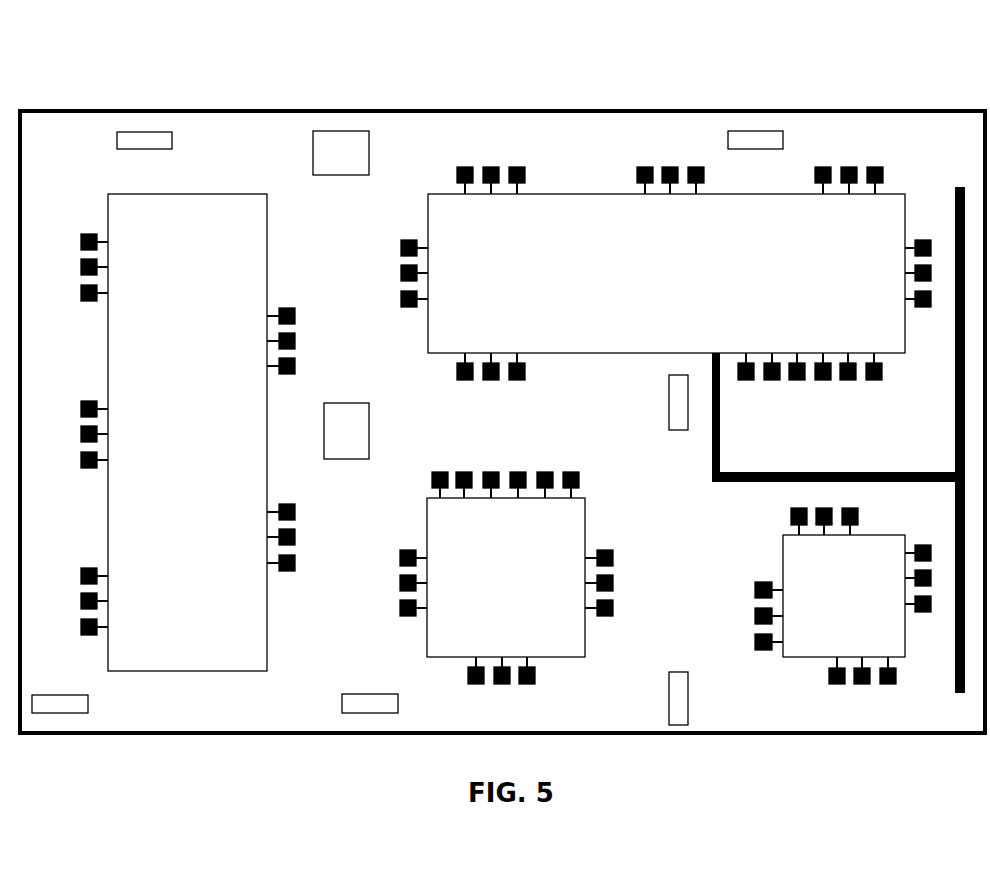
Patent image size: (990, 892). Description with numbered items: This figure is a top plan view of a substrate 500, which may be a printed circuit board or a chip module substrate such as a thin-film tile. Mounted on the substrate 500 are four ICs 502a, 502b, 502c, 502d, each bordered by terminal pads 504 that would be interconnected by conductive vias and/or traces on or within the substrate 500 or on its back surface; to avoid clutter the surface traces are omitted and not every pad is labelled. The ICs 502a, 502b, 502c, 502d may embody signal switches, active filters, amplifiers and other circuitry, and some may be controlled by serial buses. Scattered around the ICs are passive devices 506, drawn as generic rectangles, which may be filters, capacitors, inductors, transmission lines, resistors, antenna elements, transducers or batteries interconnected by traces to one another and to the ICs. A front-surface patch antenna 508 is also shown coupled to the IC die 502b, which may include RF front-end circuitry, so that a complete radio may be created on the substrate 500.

The substrate 500 is at (542, 111).
The IC 502a is at (108, 194).
The IC die 502b is at (608, 194).
The IC 502c is at (427, 532).
The IC 502d is at (781, 561).
The terminal pads 504 is at (400, 250).
The passive devices 506 is at (172, 141).
The patch antenna 508 is at (887, 472).